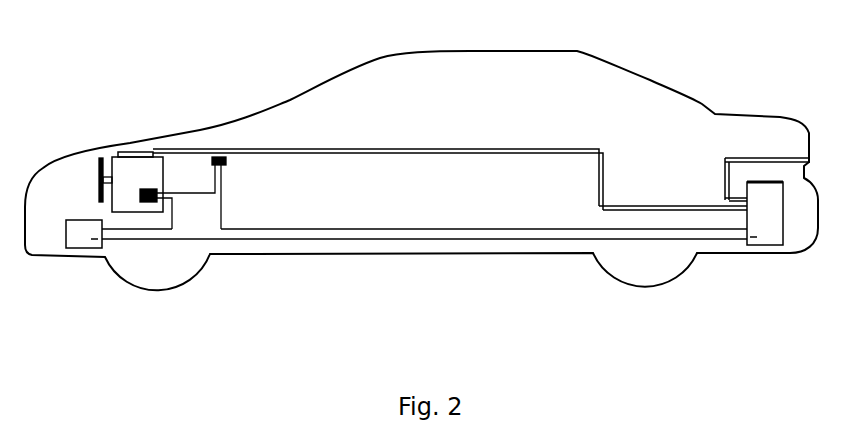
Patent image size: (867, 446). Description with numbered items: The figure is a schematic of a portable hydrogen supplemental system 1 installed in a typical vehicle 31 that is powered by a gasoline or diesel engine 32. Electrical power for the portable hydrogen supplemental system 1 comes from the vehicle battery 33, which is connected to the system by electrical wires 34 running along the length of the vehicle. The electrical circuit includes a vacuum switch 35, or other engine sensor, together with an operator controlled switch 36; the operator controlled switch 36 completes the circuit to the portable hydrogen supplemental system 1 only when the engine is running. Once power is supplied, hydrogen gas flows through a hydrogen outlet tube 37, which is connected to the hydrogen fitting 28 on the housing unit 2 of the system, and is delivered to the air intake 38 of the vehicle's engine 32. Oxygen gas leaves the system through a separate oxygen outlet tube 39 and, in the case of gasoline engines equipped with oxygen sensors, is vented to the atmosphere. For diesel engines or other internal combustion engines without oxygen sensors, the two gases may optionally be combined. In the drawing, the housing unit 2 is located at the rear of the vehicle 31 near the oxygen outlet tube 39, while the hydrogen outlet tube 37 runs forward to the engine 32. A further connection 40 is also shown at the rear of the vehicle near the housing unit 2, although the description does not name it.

The portable hydrogen supplemental system 1 is at (775, 222).
The housing unit 2 is at (770, 200).
The hydrogen fitting 28 is at (747, 211).
The vehicle 31 is at (382, 60).
The engine 32 is at (123, 172).
The vehicle battery 33 is at (95, 250).
The electrical wires 34 is at (268, 232).
The vacuum switch 35 is at (152, 189).
The operator controlled switch 36 is at (227, 161).
The hydrogen outlet tube 37 is at (381, 153).
The air intake 38 is at (141, 152).
The oxygen outlet tube 39 is at (763, 157).
The tank line 40 is at (745, 199).